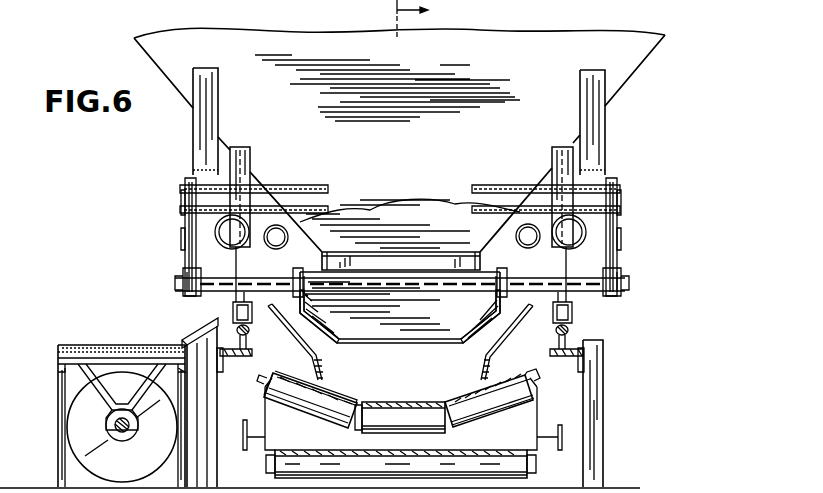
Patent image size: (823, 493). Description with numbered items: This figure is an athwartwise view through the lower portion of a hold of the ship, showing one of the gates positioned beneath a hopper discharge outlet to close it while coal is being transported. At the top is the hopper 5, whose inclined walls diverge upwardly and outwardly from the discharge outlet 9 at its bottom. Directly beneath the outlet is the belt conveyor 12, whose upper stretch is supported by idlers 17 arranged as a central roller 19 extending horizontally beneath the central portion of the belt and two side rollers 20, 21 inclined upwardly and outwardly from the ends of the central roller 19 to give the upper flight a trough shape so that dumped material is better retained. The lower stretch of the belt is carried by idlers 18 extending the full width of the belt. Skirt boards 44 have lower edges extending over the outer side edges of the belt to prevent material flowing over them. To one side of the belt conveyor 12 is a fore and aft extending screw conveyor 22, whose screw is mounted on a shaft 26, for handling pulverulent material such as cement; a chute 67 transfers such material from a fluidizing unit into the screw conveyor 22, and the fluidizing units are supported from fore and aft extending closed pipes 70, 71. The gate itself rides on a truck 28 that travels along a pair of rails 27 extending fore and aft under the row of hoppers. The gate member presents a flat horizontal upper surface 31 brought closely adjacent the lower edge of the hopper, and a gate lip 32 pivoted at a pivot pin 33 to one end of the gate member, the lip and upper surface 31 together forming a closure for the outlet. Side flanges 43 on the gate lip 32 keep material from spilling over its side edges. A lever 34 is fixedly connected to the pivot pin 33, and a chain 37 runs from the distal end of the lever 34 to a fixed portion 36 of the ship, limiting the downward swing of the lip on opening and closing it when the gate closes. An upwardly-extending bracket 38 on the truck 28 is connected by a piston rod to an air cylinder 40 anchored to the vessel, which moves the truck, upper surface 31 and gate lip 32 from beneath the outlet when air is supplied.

The hopper 5 is at (647, 50).
The discharge outlet 9 is at (340, 265).
The belt conveyor 12 is at (438, 390).
The idlers 17 is at (294, 426).
The idlers 18 is at (380, 471).
The central roller 19 is at (410, 421).
The side roller 20 is at (503, 403).
The side roller 21 is at (308, 405).
The screw conveyor 22 is at (121, 399).
The shaft 26 is at (128, 432).
The rails 27 is at (243, 337).
The truck 28 is at (597, 316).
The upper surface 31 is at (377, 270).
The gate lip 32 is at (397, 338).
The pivot pin 33 is at (207, 292).
The lever 34 is at (183, 260).
The fixed portion 36 is at (185, 185).
The chain 37 is at (185, 229).
The bracket 38 is at (560, 262).
The air cylinder 40 is at (240, 246).
The side flanges 43 is at (318, 312).
The skirt boards 44 is at (303, 348).
The chute 67 is at (206, 384).
The closed pipe 70 is at (516, 243).
The closed pipe 71 is at (289, 240).